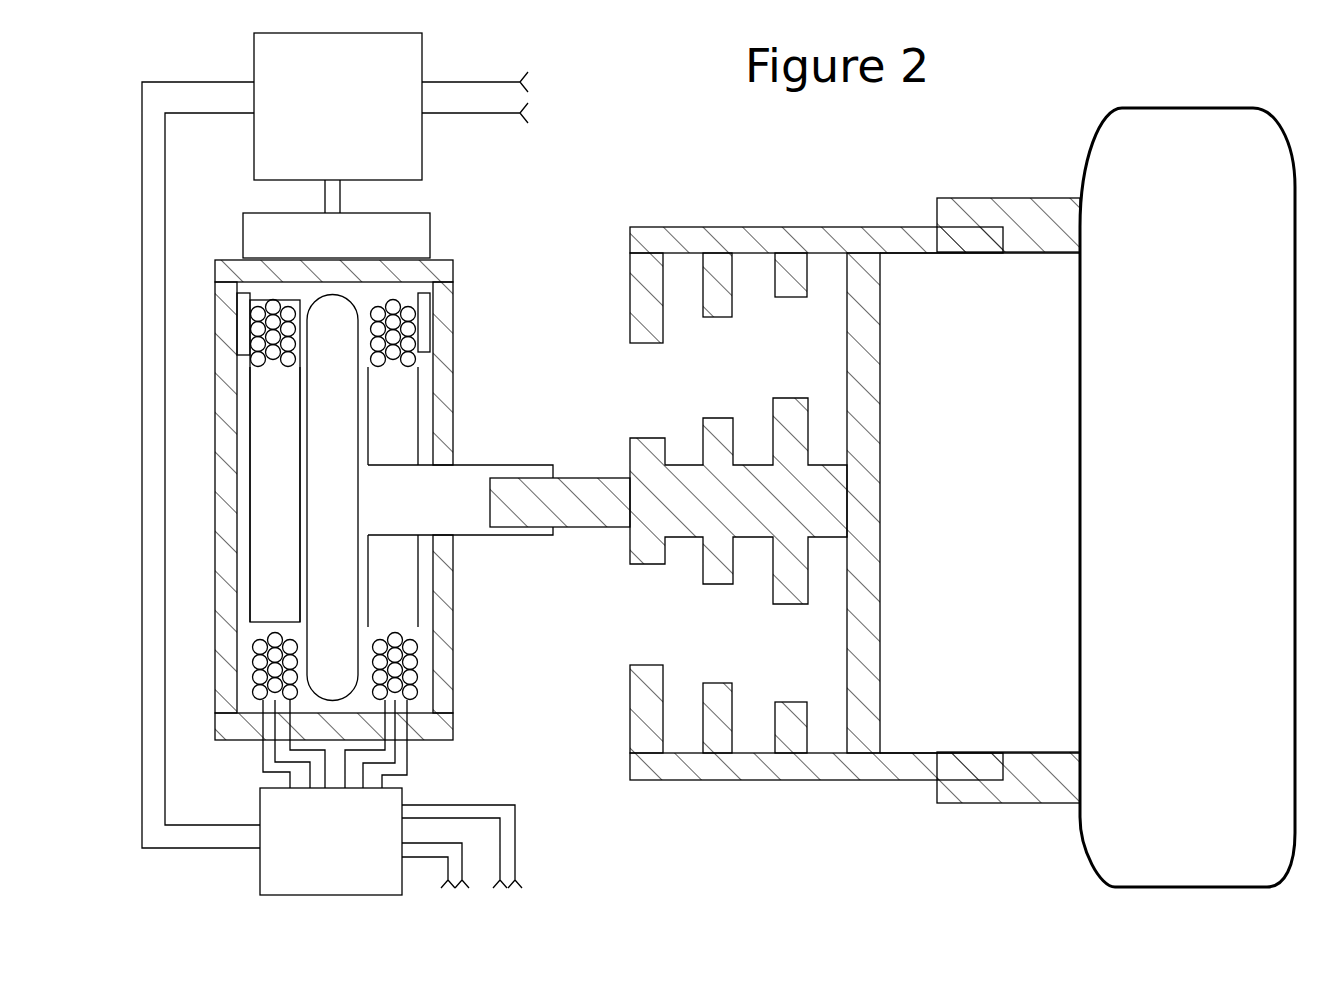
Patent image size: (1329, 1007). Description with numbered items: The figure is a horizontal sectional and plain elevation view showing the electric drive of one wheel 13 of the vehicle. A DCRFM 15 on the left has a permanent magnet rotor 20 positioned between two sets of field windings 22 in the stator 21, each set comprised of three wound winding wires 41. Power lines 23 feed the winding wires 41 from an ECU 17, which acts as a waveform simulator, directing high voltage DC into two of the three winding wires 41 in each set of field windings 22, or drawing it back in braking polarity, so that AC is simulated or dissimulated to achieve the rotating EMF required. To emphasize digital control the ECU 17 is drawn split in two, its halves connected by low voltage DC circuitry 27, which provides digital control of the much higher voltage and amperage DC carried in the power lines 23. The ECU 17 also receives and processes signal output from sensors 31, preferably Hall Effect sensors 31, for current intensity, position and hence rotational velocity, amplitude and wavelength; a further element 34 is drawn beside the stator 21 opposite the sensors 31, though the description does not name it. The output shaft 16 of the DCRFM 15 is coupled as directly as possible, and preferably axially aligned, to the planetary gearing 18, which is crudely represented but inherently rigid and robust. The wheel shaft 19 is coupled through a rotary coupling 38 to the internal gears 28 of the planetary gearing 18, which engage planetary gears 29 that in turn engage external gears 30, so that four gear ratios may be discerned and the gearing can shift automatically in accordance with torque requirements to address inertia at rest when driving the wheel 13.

The wheel 13 is at (1198, 108).
The DCRFM 15 is at (465, 360).
The output shaft 16 is at (468, 470).
The ECU 17 is at (405, 166).
The planetary gearing 18 is at (737, 210).
The wheel shaft 19 is at (1040, 198).
The permanent magnet rotor 20 is at (322, 434).
The stator 21 is at (285, 444).
The field windings 22 is at (273, 370).
The power lines 23 is at (255, 770).
The low voltage DC circuitry 27 is at (170, 158).
The internal gears 28 is at (840, 397).
The planetary gears 29 is at (847, 310).
The external gears 30 is at (665, 338).
The sensors 31 is at (428, 307).
The permanent magnet 34 is at (237, 333).
The rotary coupling 38 is at (573, 535).
The winding wires 41 is at (392, 370).